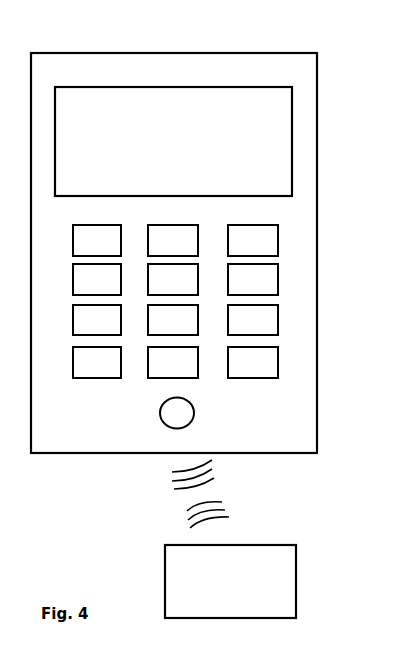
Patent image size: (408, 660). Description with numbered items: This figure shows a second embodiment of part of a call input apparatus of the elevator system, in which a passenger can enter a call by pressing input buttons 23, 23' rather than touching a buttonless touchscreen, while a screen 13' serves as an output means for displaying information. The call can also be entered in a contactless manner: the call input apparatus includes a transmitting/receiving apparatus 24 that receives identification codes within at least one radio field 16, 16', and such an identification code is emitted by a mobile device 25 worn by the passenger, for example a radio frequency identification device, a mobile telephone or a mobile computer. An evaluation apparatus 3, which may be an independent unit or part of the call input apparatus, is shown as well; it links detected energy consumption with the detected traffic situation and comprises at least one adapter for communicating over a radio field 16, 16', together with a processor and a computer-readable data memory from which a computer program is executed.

The evaluation apparatus 3 is at (283, 76).
The screen 13' is at (211, 141).
The input button 23' is at (297, 261).
The input button 23 is at (295, 343).
The transmitting/receiving apparatus 24 is at (178, 410).
The radio field 16 is at (132, 494).
The radio field 16' is at (200, 494).
The mobile device 25 is at (225, 588).